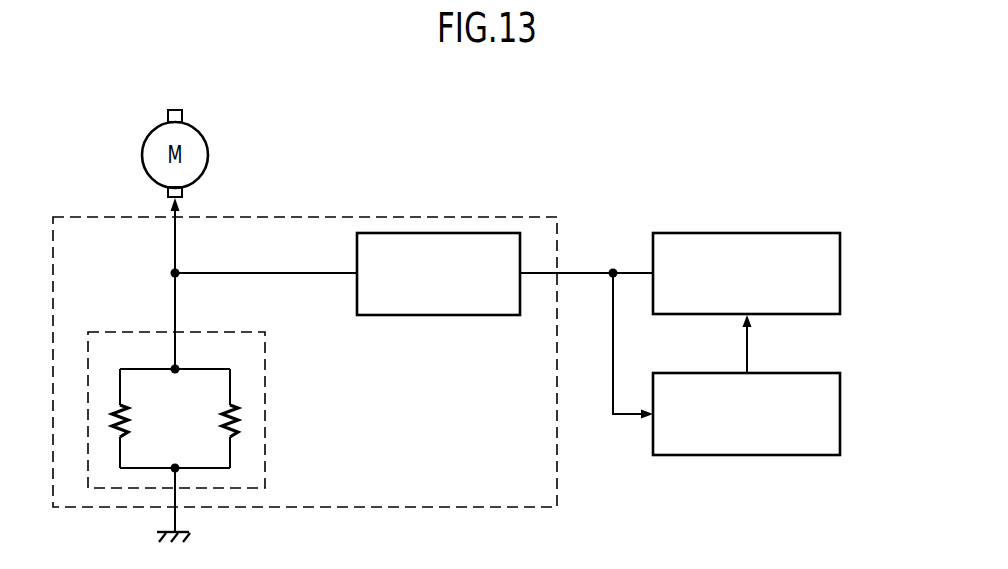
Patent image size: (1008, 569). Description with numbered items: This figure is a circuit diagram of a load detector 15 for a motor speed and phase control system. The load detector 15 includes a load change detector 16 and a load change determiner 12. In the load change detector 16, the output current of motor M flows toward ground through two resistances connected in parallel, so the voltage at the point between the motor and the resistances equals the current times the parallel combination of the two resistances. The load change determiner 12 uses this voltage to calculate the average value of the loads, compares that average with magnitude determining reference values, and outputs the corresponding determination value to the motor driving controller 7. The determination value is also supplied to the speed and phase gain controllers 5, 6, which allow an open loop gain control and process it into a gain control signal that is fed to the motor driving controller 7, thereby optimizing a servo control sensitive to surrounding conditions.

The load detector 15 is at (310, 216).
The load change detector 16 is at (266, 433).
The load change determiner 12 is at (441, 308).
The motor driving controller 7 is at (833, 276).
The speed gain controller 5 is at (782, 414).
The phase gain controller 6 is at (833, 425).